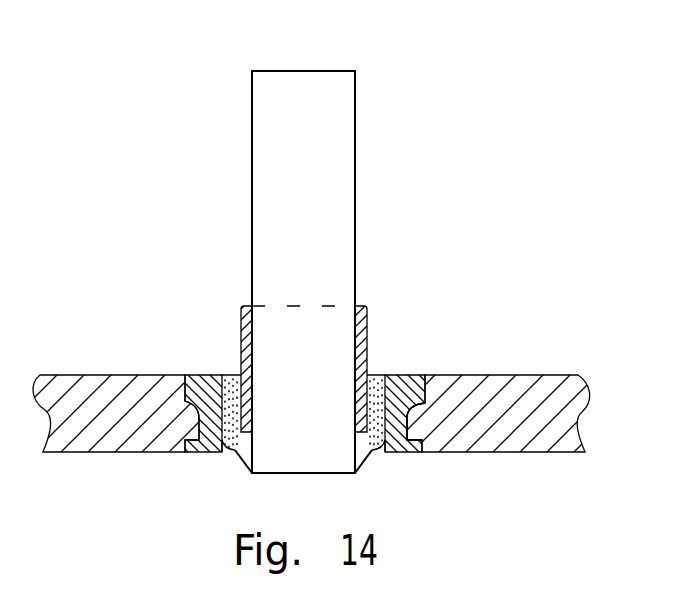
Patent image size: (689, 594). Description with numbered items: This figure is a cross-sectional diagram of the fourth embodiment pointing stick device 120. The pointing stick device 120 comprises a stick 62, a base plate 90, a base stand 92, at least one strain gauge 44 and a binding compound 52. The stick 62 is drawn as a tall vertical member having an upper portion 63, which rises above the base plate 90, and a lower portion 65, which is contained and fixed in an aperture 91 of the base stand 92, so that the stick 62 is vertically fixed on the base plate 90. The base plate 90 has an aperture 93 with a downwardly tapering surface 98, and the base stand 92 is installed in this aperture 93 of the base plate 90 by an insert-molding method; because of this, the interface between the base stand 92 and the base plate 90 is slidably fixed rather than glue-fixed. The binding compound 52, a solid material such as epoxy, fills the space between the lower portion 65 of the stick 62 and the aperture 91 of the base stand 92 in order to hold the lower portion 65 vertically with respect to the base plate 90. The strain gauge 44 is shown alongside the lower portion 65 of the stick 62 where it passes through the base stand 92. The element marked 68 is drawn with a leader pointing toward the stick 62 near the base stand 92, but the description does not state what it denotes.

The pointing stick device 120 is at (170, 78).
The stick 62 is at (356, 110).
The upper portion 63 is at (318, 206).
The lower portion 65 is at (321, 408).
The strain gauge 44 is at (363, 307).
The pin shoulder 68 is at (262, 366).
The base plate 90 is at (502, 393).
The aperture 91 is at (226, 375).
The binding compound 52 is at (374, 385).
The downwardly tapering surface 98 is at (441, 400).
The base stand 92 is at (195, 376).
The aperture 93 is at (388, 432).